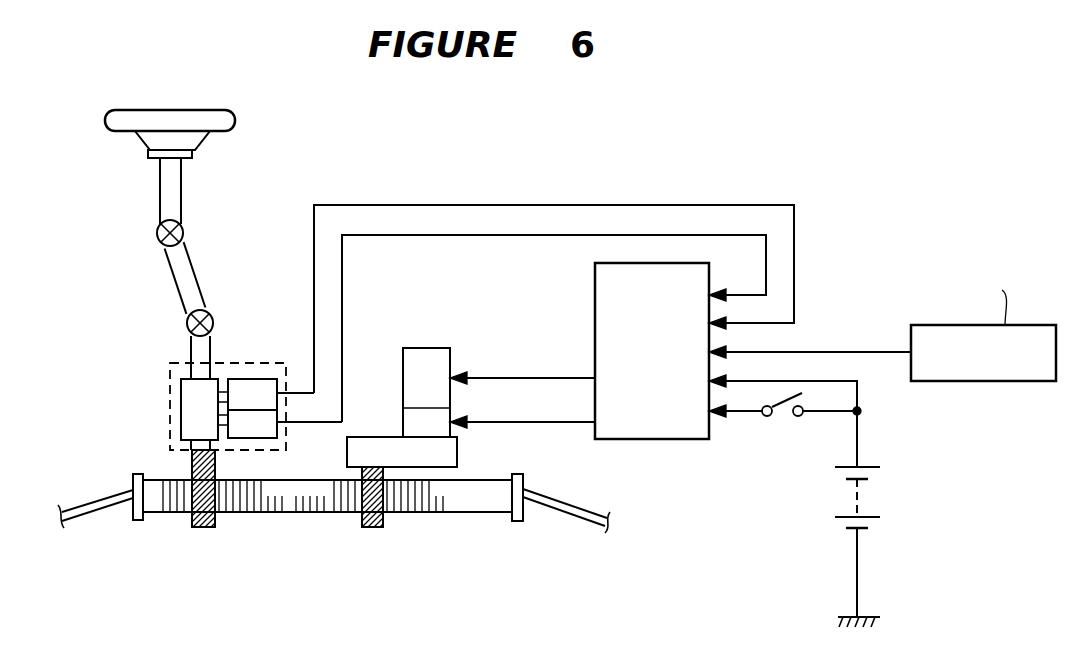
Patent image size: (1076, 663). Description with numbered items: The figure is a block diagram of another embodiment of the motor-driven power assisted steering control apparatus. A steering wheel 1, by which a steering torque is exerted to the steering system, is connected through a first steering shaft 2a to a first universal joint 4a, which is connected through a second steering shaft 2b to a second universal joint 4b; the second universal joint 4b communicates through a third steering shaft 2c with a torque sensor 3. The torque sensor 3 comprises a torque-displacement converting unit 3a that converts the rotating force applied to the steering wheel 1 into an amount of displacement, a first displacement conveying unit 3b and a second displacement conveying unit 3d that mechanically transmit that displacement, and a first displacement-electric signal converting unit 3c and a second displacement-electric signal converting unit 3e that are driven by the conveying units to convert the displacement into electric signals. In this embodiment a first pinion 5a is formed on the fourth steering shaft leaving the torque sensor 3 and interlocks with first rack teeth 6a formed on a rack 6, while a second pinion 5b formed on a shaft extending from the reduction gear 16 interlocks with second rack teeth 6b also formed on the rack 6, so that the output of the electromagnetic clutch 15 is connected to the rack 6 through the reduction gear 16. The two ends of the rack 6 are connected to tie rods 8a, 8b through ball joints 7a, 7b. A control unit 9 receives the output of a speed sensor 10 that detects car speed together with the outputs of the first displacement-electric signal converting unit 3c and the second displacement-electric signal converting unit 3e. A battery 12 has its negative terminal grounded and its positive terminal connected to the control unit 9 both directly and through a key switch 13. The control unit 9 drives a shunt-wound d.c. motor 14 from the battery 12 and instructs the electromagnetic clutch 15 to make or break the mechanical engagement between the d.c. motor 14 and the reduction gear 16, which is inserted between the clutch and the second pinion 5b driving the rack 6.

The steering wheel 1 is at (220, 121).
The first steering shaft 2a is at (180, 191).
The second steering shaft 2b is at (192, 268).
The third steering shaft 2c is at (197, 345).
The torque sensor 3 is at (170, 383).
The torque-displacement converting unit 3a is at (205, 418).
The first displacement conveying unit 3b is at (215, 446).
The first displacement-electric signal converting unit 3c is at (265, 425).
The second displacement conveying unit 3d is at (222, 391).
The second displacement-electric signal converting unit 3e is at (255, 395).
The first universal joint 4a is at (183, 228).
The second universal joint 4b is at (207, 316).
The first pinion 5a is at (205, 527).
The second pinion 5b is at (368, 527).
The rack 6 is at (478, 495).
The first rack teeth 6a is at (262, 505).
The second rack teeth 6b is at (415, 505).
The ball joint 7a is at (140, 518).
The ball joint 7b is at (527, 515).
The tie rod 8a is at (90, 500).
The tie rod 8b is at (548, 504).
The control unit 9 is at (667, 420).
The speed sensor 10 is at (980, 365).
The battery 12 is at (870, 505).
The key switch 13 is at (781, 416).
The d.c. motor 14 is at (418, 378).
The electromagnetic clutch 15 is at (430, 418).
The reduction gear 16 is at (440, 453).